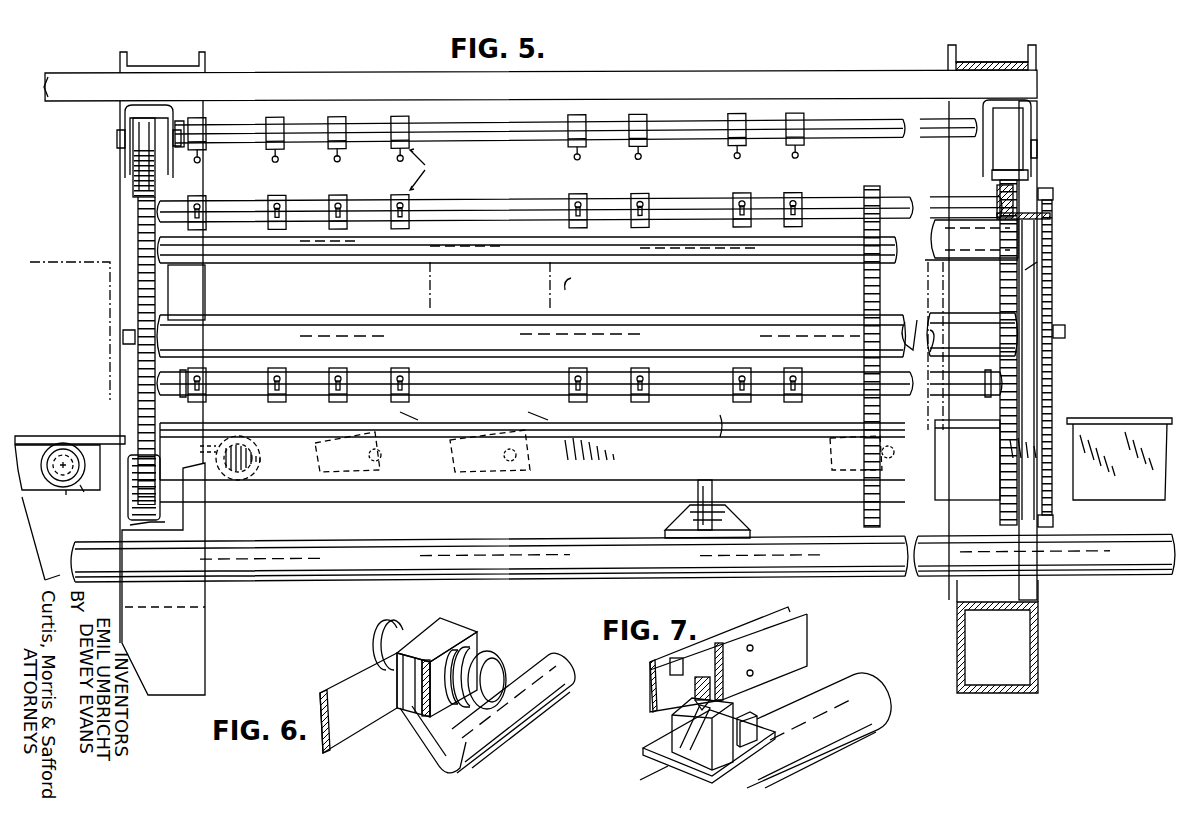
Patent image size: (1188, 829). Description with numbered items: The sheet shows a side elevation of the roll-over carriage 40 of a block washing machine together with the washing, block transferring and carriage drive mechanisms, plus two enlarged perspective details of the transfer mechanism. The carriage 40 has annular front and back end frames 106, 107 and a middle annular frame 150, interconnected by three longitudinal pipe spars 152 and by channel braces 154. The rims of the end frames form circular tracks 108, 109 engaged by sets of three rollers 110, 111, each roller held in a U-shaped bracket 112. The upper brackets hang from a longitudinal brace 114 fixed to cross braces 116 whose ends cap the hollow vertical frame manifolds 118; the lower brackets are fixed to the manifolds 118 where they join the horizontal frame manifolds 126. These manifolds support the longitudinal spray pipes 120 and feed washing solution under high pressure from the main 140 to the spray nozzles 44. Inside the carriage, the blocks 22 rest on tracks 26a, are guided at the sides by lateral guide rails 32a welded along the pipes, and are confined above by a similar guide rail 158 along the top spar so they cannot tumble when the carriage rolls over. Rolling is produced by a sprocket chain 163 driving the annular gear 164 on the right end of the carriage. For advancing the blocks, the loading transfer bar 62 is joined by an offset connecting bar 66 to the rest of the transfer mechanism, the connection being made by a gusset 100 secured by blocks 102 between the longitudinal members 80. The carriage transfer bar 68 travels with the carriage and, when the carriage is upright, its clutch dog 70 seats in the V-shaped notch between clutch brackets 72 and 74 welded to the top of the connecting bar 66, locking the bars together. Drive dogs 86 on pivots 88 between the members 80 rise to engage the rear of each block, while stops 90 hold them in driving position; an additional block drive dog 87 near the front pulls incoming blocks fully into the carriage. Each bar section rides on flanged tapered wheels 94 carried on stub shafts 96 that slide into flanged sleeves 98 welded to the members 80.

In FIG. 5, the blocks 22 is at (550, 296).
In FIG. 5, the tracks 26a is at (628, 424).
In FIG. 5, the lateral guide rails 32a is at (912, 320).
In FIG. 5, the roll-over carriage 40 is at (666, 232).
In FIG. 5, the spray nozzles 44 is at (427, 169).
In FIG. 5, the loading transfer bar 62 is at (33, 445).
In FIG. 5, the offset connecting bar 66 is at (579, 544).
In FIG. 6, the offset connecting bar 66 is at (544, 700).
In FIG. 7, the offset connecting bar 66 is at (846, 740).
In FIG. 7, the carriage transfer bar 68 is at (790, 602).
In FIG. 5, the clutch dog 70 is at (712, 488).
In FIG. 7, the clutch dog 70 is at (737, 704).
In FIG. 5, the clutch bracket 72 is at (683, 518).
In FIG. 7, the clutch bracket 72 is at (722, 745).
In FIG. 5, the clutch bracket 74 is at (730, 514).
In FIG. 7, the clutch bracket 74 is at (752, 704).
In FIG. 6, the longitudinal members 80 is at (330, 680).
In FIG. 7, the longitudinal members 80 is at (764, 618).
In FIG. 5, the drive dogs 86 is at (528, 412).
In FIG. 5, the block drive dog 87 is at (400, 412).
In FIG. 5, the pivots 88 is at (376, 462).
In FIG. 5, the stops 90 is at (314, 462).
In FIG. 5, the flanged tapered wheels 94 is at (64, 445).
In FIG. 6, the flanged tapered wheels 94 is at (374, 628).
In FIG. 5, the stub shafts 96 is at (54, 498).
In FIG. 5, the flanged sleeves 98 is at (82, 496).
In FIG. 6, the flanged sleeves 98 is at (474, 654).
In FIG. 5, the gusset 100 is at (58, 572).
In FIG. 6, the gusset 100 is at (410, 738).
In FIG. 6, the blocks 102 is at (442, 624).
In FIG. 5, the front end frame 106 is at (120, 245).
In FIG. 5, the back end frame 107 is at (1037, 262).
In FIG. 5, the circular track 108 is at (138, 222).
In FIG. 5, the circular track 109 is at (1008, 522).
In FIG. 5, the rollers 110 is at (133, 182).
In FIG. 5, the rollers 111 is at (1020, 180).
In FIG. 5, the U-shaped bracket 112 is at (124, 133).
In FIG. 5, the longitudinal brace 114 is at (760, 72).
In FIG. 5, the cross braces 116 is at (205, 60).
In FIG. 5, the vertical frame manifolds 118 is at (205, 290).
In FIG. 5, the longitudinal spray pipes 120 is at (490, 144).
In FIG. 5, the horizontal frame manifolds 126 is at (268, 498).
In FIG. 5, the main 140 is at (1008, 650).
In FIG. 5, the middle annular frame 150 is at (880, 280).
In FIG. 5, the longitudinal pipe spars 152 is at (461, 260).
In FIG. 5, the channel braces 154 is at (703, 419).
In FIG. 5, the guide rail 158 is at (568, 276).
In FIG. 5, the sprocket chain 163 is at (1053, 190).
In FIG. 5, the annular gear 164 is at (1052, 244).